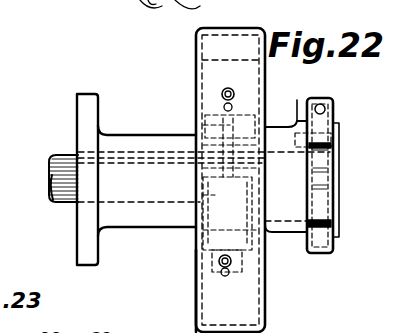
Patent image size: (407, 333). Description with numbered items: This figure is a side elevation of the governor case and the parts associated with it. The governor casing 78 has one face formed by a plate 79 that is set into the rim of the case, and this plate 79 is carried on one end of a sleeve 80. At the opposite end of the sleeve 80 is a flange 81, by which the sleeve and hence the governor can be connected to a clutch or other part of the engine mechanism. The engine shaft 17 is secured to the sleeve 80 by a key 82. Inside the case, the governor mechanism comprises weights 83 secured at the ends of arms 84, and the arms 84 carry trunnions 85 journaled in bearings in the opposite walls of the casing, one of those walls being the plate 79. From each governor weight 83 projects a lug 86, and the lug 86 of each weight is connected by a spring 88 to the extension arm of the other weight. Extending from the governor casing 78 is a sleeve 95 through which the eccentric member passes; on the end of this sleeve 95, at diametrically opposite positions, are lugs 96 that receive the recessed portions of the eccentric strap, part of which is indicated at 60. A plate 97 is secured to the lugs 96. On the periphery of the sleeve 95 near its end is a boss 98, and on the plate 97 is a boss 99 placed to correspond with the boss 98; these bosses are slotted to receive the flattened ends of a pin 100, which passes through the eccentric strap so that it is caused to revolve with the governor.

The engine shaft 17 is at (53, 174).
The eccentric strap part 60 is at (320, 254).
The governor casing 78 is at (229, 28).
The plate 79 is at (197, 62).
The sleeve 80 is at (143, 142).
The flange 81 is at (88, 94).
The key 82 is at (82, 153).
The governor weight 83 is at (195, 256).
The arm 84 is at (255, 158).
The trunnion 85 is at (197, 128).
The lug 86 is at (243, 262).
The spring 88 is at (197, 88).
The sleeve 95 is at (268, 134).
The lug 96 is at (340, 203).
The plate 97 is at (337, 157).
The boss 98 is at (298, 100).
The boss 99 is at (335, 125).
The pin 100 is at (338, 138).